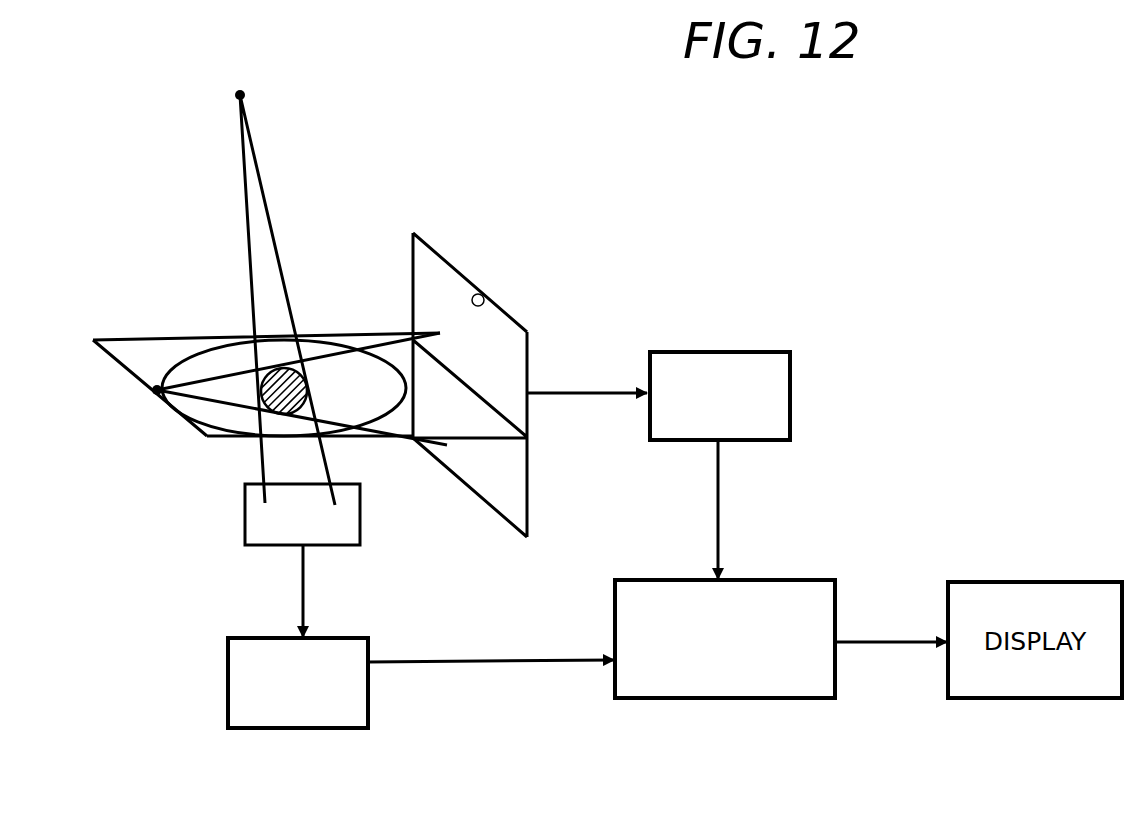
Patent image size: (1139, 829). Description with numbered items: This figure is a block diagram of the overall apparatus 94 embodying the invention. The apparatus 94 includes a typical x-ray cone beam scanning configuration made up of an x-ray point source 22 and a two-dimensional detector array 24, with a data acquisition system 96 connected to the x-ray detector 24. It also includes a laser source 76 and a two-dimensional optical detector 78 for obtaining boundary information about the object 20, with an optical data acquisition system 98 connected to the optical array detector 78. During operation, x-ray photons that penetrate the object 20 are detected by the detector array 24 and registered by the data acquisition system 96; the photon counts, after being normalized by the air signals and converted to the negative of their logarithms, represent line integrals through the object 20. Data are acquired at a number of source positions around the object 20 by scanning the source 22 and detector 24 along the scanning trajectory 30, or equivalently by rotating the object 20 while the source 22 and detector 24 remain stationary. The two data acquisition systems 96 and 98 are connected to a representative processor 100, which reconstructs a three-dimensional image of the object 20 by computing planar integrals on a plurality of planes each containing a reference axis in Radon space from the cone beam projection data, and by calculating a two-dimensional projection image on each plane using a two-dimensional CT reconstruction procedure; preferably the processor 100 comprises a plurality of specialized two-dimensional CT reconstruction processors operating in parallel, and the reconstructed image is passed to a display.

The object 20 is at (262, 414).
The x-ray point source 22 is at (155, 396).
The detector array 24 is at (482, 296).
The scanning trajectory 30 is at (188, 358).
The laser source 76 is at (246, 95).
The 2D optical detector 78 is at (360, 525).
The apparatus 94 is at (982, 276).
The data acquisition system 96 is at (747, 352).
The optical data acquisition system 98 is at (315, 728).
The processor 100 is at (700, 698).